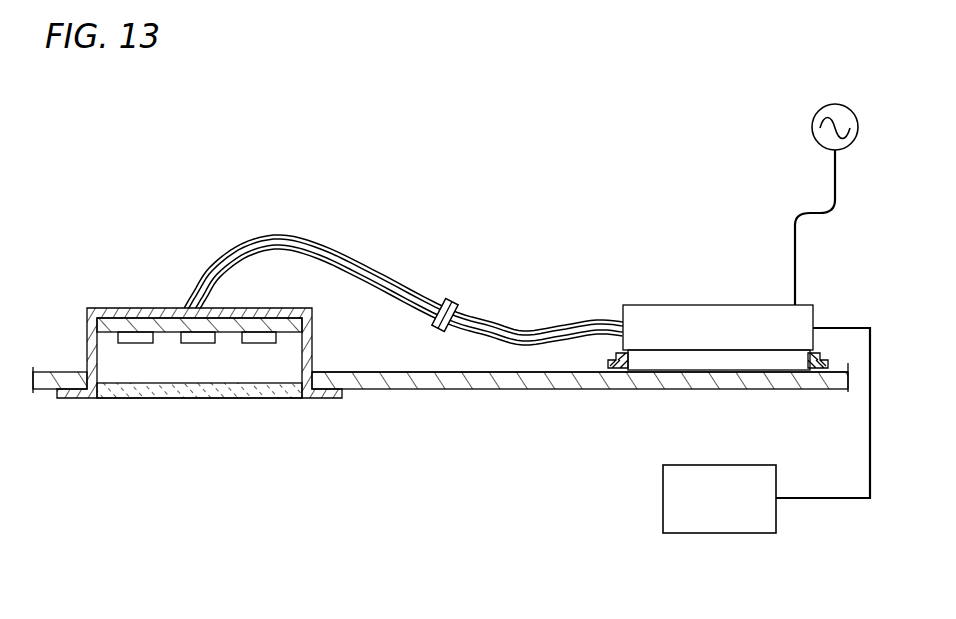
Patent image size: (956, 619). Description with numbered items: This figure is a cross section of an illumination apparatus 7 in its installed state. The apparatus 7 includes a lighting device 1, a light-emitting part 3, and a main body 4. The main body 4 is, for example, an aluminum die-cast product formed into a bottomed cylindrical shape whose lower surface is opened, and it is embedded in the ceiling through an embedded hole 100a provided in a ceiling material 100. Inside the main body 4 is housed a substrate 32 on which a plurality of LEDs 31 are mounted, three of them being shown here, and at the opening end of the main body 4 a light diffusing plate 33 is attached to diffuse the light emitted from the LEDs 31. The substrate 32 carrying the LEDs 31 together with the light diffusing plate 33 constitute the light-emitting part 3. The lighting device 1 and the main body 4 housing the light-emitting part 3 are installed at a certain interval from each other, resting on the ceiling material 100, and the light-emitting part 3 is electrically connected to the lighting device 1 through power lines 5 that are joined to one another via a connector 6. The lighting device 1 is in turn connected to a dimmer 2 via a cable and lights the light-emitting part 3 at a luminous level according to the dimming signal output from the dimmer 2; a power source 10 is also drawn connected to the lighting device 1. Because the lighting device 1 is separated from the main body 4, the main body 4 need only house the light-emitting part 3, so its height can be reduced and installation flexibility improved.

The lighting device 1 is at (717, 308).
The dimmer 2 is at (723, 467).
The light-emitting part 3 is at (199, 371).
The main body 4 is at (92, 341).
The power lines 5 is at (362, 263).
The connector 6 is at (455, 308).
The illumination apparatus 7 is at (558, 240).
The AC power source 10 is at (815, 140).
The LEDs 31 is at (137, 340).
The substrate 32 is at (153, 325).
The light diffusing plate 33 is at (161, 392).
The ceiling material 100 is at (512, 382).
The embedded hole 100a is at (305, 373).